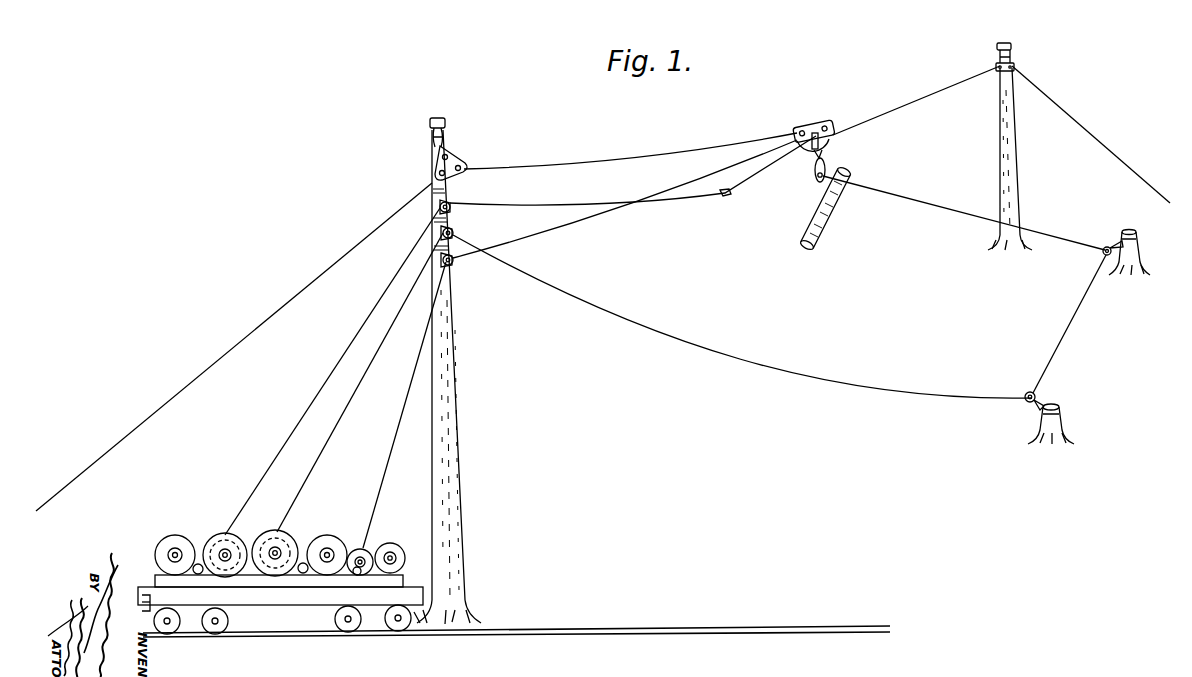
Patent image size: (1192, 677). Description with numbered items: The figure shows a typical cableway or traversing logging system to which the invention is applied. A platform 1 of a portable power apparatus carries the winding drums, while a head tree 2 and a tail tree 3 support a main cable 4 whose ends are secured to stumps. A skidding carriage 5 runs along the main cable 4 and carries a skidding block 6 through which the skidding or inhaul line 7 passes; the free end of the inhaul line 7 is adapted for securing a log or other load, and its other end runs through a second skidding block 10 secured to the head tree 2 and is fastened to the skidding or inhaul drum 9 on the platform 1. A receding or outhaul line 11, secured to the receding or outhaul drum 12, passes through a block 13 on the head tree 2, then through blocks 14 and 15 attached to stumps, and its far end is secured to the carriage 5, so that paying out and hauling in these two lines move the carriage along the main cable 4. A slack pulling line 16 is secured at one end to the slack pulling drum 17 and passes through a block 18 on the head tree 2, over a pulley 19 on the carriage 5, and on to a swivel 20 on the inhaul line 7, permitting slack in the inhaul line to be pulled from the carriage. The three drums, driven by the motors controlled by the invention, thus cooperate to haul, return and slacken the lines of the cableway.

The platform 1 is at (297, 597).
The head tree 2 is at (456, 507).
The tail tree 3 is at (1007, 165).
The main cable 4 is at (616, 160).
The skidding carriage 5 is at (813, 122).
The skidding block 6 is at (817, 182).
The skidding or inhaul line 7 is at (757, 190).
The skidding or inhaul drum 9 is at (218, 537).
The second skidding block 10 is at (451, 212).
The receding or outhaul line 11 is at (320, 452).
The receding or outhaul drum 12 is at (294, 545).
The block 13 is at (454, 231).
The block 14 is at (1025, 393).
The block 15 is at (1101, 255).
The slack pulling line 16 is at (392, 442).
The slack pulling drum 17 is at (362, 548).
The block 18 is at (453, 264).
The pulley 19 is at (830, 138).
The swivel 20 is at (722, 196).